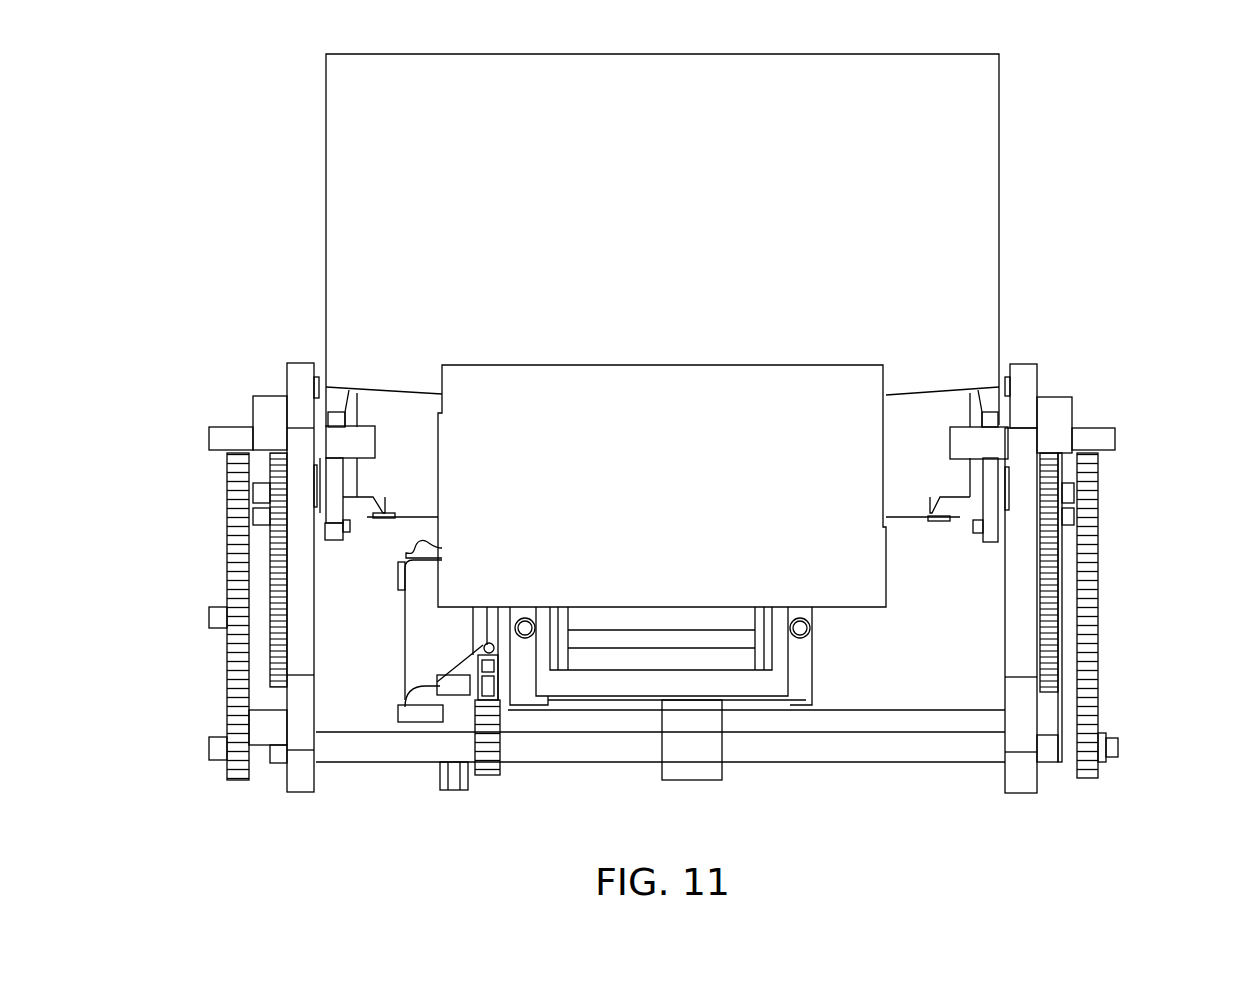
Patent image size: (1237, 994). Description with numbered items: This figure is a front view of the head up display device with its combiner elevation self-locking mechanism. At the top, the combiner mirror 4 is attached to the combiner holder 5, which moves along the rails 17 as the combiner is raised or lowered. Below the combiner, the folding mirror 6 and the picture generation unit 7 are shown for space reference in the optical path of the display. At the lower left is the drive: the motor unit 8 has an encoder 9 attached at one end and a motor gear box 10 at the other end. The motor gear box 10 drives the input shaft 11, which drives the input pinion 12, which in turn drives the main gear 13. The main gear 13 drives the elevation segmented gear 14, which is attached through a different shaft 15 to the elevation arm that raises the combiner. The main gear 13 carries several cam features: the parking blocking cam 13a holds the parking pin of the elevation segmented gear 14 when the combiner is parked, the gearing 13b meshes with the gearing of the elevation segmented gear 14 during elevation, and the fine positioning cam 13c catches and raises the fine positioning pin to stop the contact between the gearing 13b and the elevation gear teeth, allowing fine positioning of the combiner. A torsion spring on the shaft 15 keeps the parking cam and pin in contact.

The combiner mirror 4 is at (368, 118).
The combiner holder 5 is at (406, 418).
The folding mirror 6 is at (666, 392).
The picture generation unit 7 is at (740, 678).
The motor unit 8 is at (430, 652).
The encoder 9 is at (406, 553).
The motor gear box 10 is at (425, 722).
The input shaft 11 is at (1122, 746).
The input pinion 12 is at (1095, 781).
The main gear 13 is at (1090, 446).
The parking blocking cam 13a is at (1059, 742).
The gearing 13b is at (1038, 690).
The fine positioning cam 13c is at (1056, 706).
The elevation segmented gear 14 is at (1030, 455).
The shaft 15 is at (1120, 440).
The rails 17 is at (1031, 360).